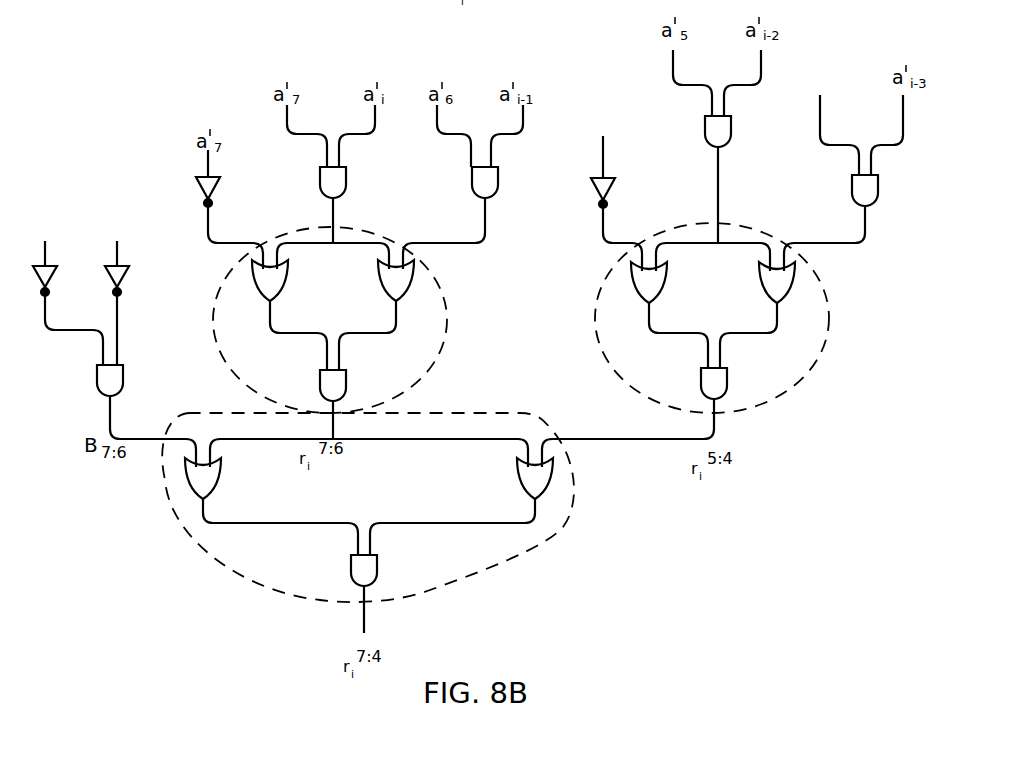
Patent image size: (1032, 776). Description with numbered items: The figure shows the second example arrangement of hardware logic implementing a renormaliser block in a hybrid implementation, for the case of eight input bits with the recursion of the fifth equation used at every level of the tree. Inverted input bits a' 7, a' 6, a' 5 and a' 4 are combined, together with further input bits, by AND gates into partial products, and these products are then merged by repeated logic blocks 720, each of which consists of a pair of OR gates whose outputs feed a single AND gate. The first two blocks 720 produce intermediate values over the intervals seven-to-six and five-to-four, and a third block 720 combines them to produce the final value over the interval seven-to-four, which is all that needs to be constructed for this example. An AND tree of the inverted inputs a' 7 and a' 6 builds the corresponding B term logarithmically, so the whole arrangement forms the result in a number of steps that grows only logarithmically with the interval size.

The logic block (OR-OR-AND combining cell) 720 is at (447, 330).
The input bit a'7 (inverted input) 7 is at (47, 213).
The input bit a'6 (inverted input) 6 is at (117, 213).
The input bit a'5 (inverted input) 5 is at (604, 114).
The input bit a' 4 is at (826, 65).